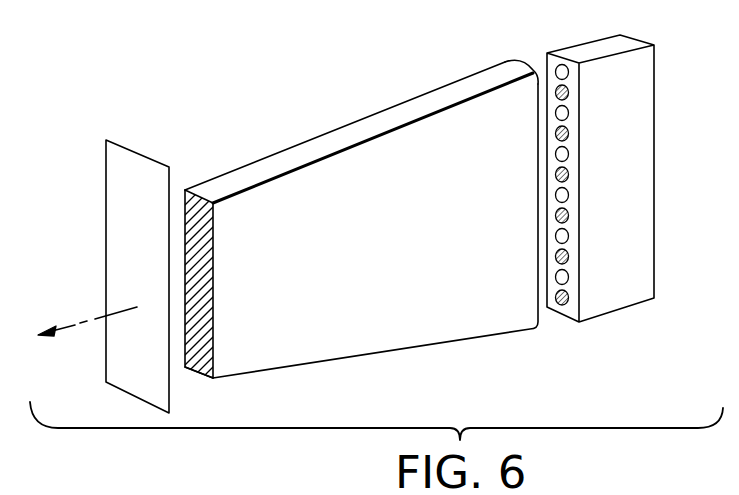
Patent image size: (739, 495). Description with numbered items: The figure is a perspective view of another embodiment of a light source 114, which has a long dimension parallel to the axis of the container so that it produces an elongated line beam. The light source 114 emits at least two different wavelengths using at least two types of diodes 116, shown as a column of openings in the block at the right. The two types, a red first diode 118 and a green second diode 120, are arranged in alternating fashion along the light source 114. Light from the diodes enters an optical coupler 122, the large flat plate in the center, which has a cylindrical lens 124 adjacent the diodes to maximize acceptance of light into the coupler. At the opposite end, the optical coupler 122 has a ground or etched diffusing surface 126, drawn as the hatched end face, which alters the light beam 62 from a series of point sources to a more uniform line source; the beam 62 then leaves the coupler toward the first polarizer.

The light beam 62 is at (192, 296).
The light source 114 is at (358, 218).
The diodes 116 is at (569, 73).
The first diode 118 is at (569, 113).
The second diode 120 is at (569, 135).
The optical coupler 122 is at (376, 127).
The cylindrical lens 124 is at (526, 64).
The diffusing surface 126 is at (200, 371).